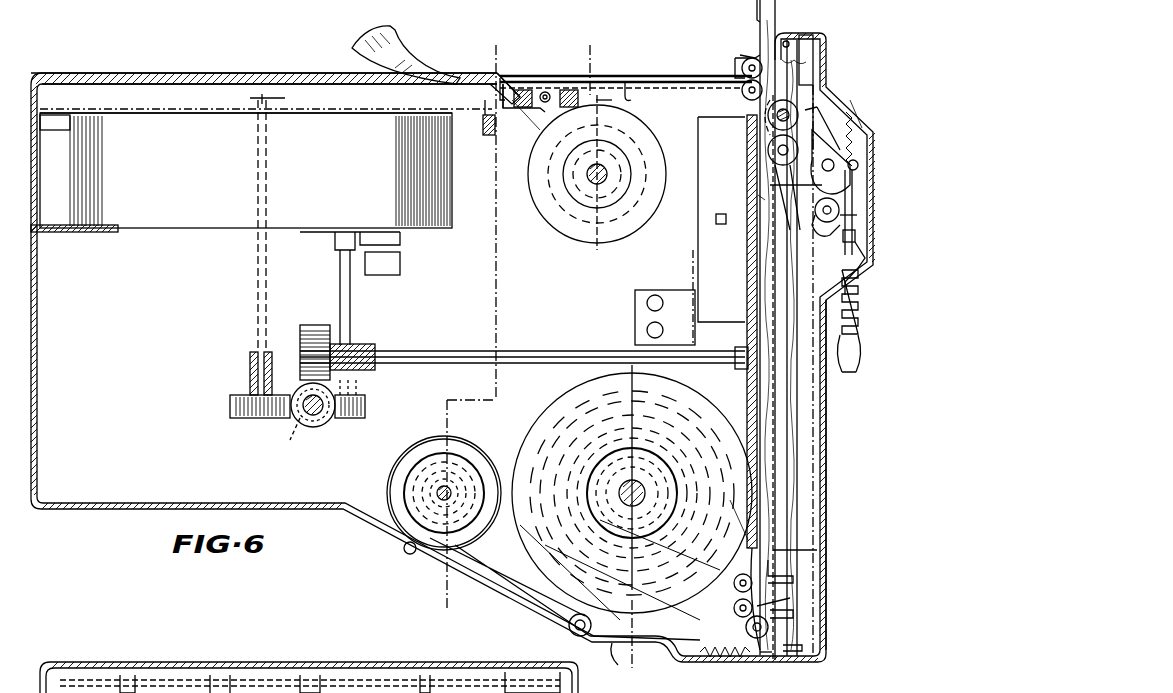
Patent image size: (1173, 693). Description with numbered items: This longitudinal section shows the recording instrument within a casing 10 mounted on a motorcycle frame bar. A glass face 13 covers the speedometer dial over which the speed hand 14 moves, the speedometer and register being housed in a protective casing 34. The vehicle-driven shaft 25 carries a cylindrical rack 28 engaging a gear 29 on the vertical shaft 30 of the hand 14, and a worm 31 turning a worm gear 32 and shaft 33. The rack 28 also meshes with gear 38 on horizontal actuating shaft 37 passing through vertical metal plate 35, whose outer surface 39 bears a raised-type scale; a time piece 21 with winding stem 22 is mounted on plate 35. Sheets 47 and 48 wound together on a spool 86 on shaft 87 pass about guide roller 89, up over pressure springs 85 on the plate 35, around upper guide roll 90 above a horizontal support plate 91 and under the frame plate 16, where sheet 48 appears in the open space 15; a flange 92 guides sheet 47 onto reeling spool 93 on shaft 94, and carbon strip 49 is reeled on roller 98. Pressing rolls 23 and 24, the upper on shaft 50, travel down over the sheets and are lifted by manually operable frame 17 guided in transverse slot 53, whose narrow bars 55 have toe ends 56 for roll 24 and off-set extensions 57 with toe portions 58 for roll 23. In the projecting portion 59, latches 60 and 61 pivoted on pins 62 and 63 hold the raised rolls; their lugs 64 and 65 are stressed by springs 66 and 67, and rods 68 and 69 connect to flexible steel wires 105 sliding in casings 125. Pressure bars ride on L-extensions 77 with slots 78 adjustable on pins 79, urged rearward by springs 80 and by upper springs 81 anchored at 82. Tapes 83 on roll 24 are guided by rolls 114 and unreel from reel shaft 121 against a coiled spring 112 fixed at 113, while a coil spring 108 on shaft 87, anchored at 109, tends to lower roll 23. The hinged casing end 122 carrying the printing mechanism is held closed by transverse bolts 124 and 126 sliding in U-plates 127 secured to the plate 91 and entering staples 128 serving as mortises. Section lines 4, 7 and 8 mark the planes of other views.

The section line 4 is at (812, 8).
The section line 7 is at (590, 45).
The section line 8 is at (497, 47).
The casing 10 is at (80, 507).
The glass face 13 is at (220, 73).
The speed hand 14 is at (313, 100).
The open space 15 is at (550, 78).
The metal frame plate 16 is at (145, 662).
The manually operable frame 17 is at (758, 8).
The time piece 21 is at (700, 195).
The winding stem 22 is at (716, 221).
The upper pressing roll 23 is at (784, 102).
The lower pressing roll 24 is at (780, 150).
The shaft 25 is at (304, 430).
The cylindrical rack 28 is at (288, 425).
The gear 29 is at (232, 405).
The vertical shaft 30 is at (258, 311).
The worm 31 is at (325, 430).
The worm gear 32 is at (365, 408).
The shaft 33 is at (351, 308).
The protective casing 34 is at (241, 181).
The metal plate 35 is at (749, 386).
The horizontal actuating shaft 37 is at (535, 350).
The gear 38 is at (315, 330).
The outer surface 39 is at (757, 262).
The paper sheet 47 is at (690, 585).
The paper sheet 48 is at (405, 50).
The carbon strip 49 is at (770, 605).
The shaft 50 is at (792, 113).
The transverse slot 53 is at (782, 32).
The narrow bars 55 is at (770, 402).
The lower ends 56 is at (793, 614).
The off-set extensions 57 is at (817, 550).
The toe portions 58 is at (794, 580).
The outwardly projecting portion 59 is at (860, 248).
The latch 60 is at (830, 162).
The latch 61 is at (822, 204).
The pin 62 is at (858, 165).
The pin 63 is at (822, 226).
The lug 64 is at (846, 150).
The lug 65 is at (770, 184).
The spring 66 is at (858, 130).
The spring 67 is at (853, 190).
The rod 68 is at (861, 212).
The rod 69 is at (848, 245).
The L-extension 77 is at (765, 654).
The horizontal slot 78 is at (833, 658).
The pin 79 is at (803, 647).
The spring 80 is at (728, 662).
The spring 81 is at (814, 52).
The frame attachment point 82 is at (758, 56).
The flexible tapes 83 is at (535, 575).
The pressure springs 85 is at (758, 200).
The spool 86 is at (632, 489).
The transverse shaft 87 is at (635, 485).
The guide roller 89 is at (743, 576).
The upper guide roll 90 is at (741, 93).
The horizontal support plate 91 is at (628, 80).
The flange 92 is at (500, 90).
The reeling spool 93 is at (566, 220).
The transverse shaft 94 is at (603, 173).
The roller 98 is at (742, 68).
The flexible steel wires 105 is at (852, 368).
The coil spring 108 is at (677, 618).
The casing attachment point 109 is at (628, 668).
The coiled spring 112 is at (470, 447).
The casing wall attachment point 113 is at (406, 553).
The guide rolls 114 is at (580, 614).
The reel shaft 121 is at (437, 493).
The casing end 122 is at (827, 465).
The bolt 124 is at (510, 105).
The casings 125 is at (858, 310).
The bolt 126 is at (612, 100).
The staples 127 is at (556, 106).
The staples 128 is at (309, 677).